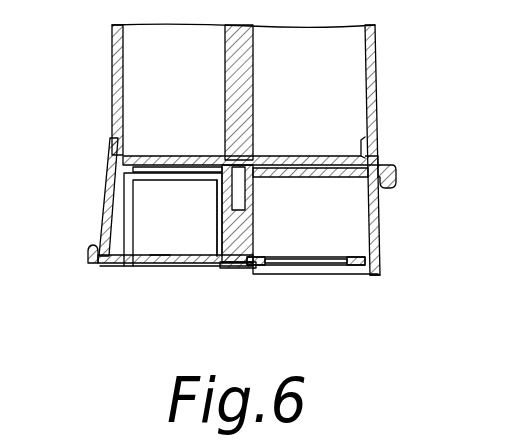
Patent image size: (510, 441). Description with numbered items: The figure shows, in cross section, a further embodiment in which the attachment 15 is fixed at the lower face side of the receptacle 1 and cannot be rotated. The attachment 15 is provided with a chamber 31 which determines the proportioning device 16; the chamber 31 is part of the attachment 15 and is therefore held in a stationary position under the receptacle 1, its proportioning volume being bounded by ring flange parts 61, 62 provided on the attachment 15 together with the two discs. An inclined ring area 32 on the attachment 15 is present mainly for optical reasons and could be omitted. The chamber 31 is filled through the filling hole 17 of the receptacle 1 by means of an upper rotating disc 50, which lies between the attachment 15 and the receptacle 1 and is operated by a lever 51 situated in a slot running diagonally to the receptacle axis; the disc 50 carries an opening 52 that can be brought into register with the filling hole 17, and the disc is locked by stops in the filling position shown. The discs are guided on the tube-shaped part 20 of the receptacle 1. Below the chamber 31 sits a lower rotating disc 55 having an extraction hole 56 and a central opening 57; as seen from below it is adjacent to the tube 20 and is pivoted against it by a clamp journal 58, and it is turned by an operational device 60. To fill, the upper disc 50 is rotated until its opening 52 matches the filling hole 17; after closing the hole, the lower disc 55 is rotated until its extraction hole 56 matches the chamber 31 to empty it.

The receptacle 1 is at (375, 72).
The attachment 15 is at (382, 223).
The proportioning device 16 is at (326, 282).
The filling hole 17 is at (176, 160).
The tube-shaped part 20 is at (262, 215).
The chamber 31 is at (183, 226).
The inclined ring area 32 is at (102, 198).
The rotating disc 50 is at (367, 150).
The lever 51 is at (395, 178).
The opening 52 is at (150, 148).
The rotating disc 55 is at (184, 268).
The extraction hole 56 is at (335, 265).
The central opening 57 is at (247, 270).
The clamp journal 58 is at (230, 275).
The operational device 60 is at (92, 265).
The ring flange part 61 is at (128, 268).
The ring flange part 62 is at (160, 264).